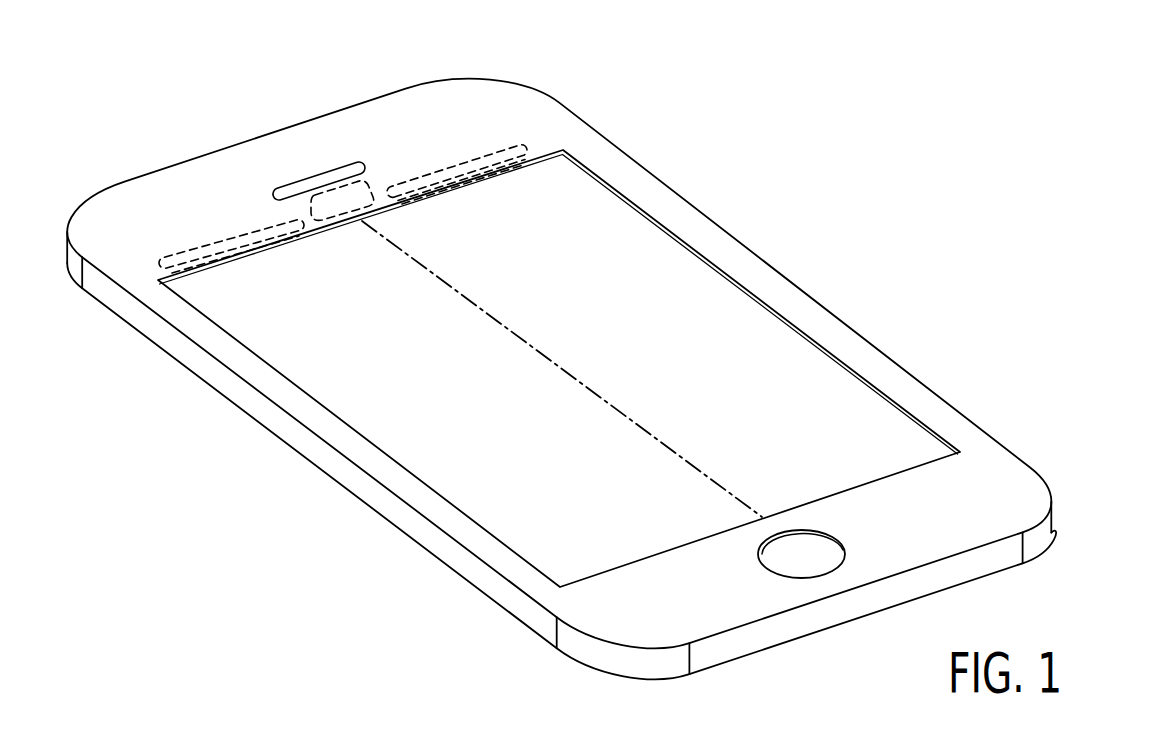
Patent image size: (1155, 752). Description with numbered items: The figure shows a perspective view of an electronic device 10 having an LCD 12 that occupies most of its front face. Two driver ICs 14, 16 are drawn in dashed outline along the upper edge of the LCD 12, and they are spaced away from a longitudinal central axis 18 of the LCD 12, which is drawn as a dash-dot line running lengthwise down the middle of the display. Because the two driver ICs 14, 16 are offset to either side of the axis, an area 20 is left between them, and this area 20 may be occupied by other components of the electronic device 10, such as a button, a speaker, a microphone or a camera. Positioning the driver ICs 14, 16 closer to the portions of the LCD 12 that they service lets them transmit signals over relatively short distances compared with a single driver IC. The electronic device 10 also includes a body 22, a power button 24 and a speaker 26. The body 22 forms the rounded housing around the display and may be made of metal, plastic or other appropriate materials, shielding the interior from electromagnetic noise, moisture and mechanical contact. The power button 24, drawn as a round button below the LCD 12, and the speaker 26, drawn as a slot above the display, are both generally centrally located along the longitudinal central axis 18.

The electronic device 10 is at (900, 77).
The LCD 12 is at (755, 328).
The driver IC 14 is at (497, 148).
The driver IC 16 is at (220, 240).
The longitudinal central axis 18 is at (515, 332).
The area 20 is at (368, 190).
The body 22 is at (1028, 485).
The power button 24 is at (805, 555).
The speaker 26 is at (317, 180).